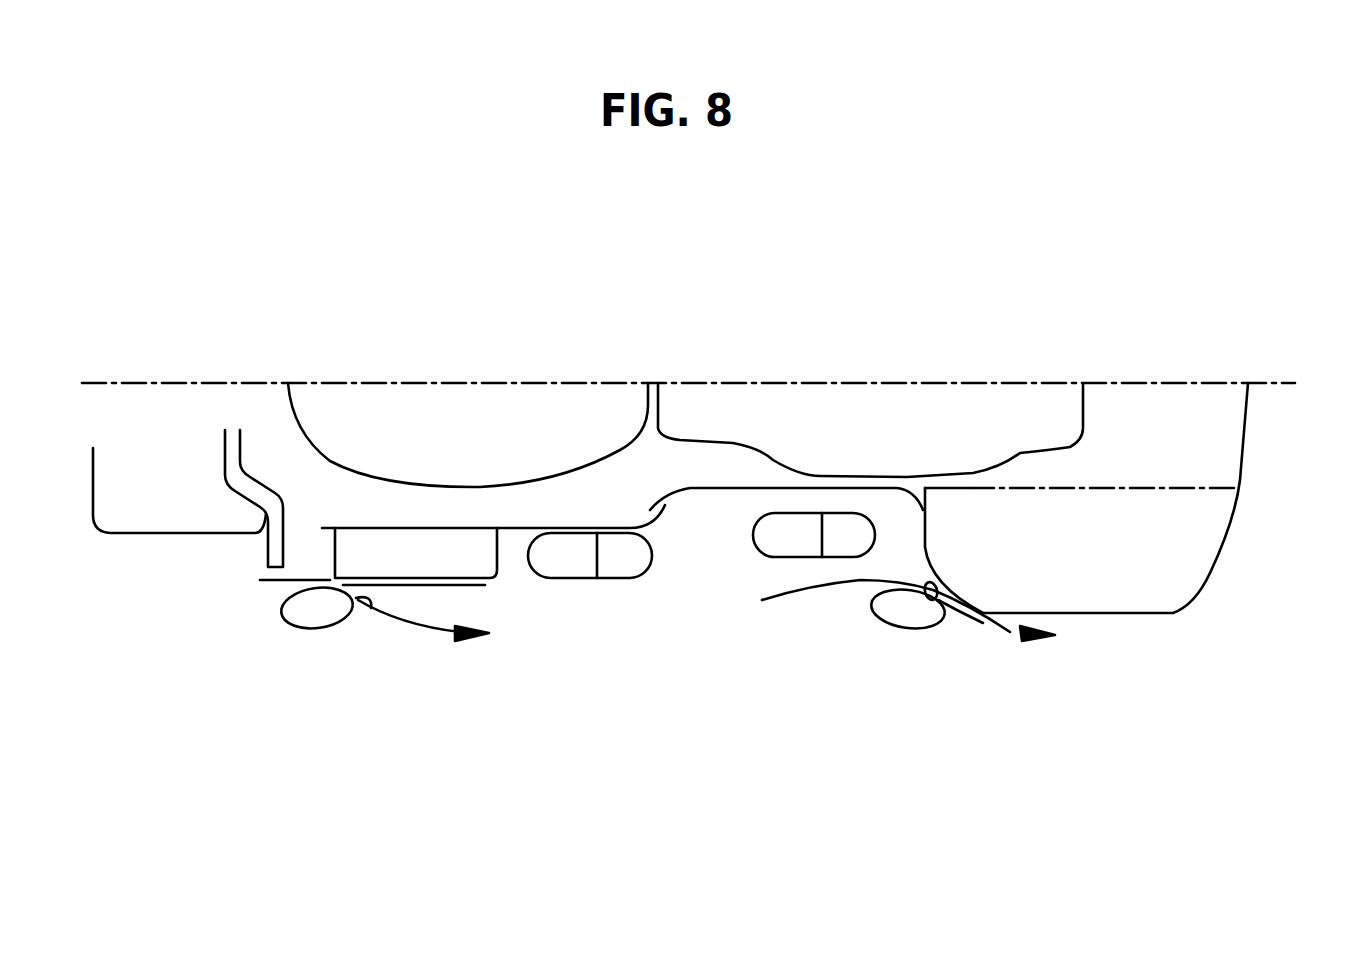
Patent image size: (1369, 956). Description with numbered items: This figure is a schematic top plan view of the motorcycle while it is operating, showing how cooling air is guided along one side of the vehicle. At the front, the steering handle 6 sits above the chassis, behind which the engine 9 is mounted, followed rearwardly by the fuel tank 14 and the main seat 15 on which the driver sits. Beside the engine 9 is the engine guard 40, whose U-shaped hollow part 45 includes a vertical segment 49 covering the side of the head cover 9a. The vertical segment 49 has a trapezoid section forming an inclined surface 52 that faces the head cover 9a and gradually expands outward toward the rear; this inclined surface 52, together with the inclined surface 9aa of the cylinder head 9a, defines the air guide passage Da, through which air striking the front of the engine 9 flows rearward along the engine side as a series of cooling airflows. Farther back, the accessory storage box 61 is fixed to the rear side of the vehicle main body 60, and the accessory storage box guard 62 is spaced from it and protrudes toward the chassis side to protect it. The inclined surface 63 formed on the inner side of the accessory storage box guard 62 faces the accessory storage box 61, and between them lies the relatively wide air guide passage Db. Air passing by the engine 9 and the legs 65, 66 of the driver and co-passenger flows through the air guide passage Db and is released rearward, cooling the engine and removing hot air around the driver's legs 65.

The steering handle 6 is at (225, 458).
The engine 9 is at (453, 540).
The head cover 9a is at (477, 575).
The inclined surface of the cylinder head 9aa is at (310, 582).
The fuel tank 14 is at (428, 407).
The main seat 15 is at (875, 400).
The engine guard 40 is at (280, 620).
The hollow part 45 is at (280, 603).
The vertical segment 49 is at (298, 630).
The inclined surface 52 is at (368, 607).
The vehicle main body 60 is at (1164, 368).
The accessory storage box 61 is at (1195, 572).
The accessory storage box guard 62 is at (873, 615).
The inclined surface 63 is at (932, 605).
The driver's legs 65 is at (613, 573).
The co-passenger's legs 66 is at (772, 547).
The air guide passage Da is at (362, 598).
The air guide passage Db is at (950, 612).